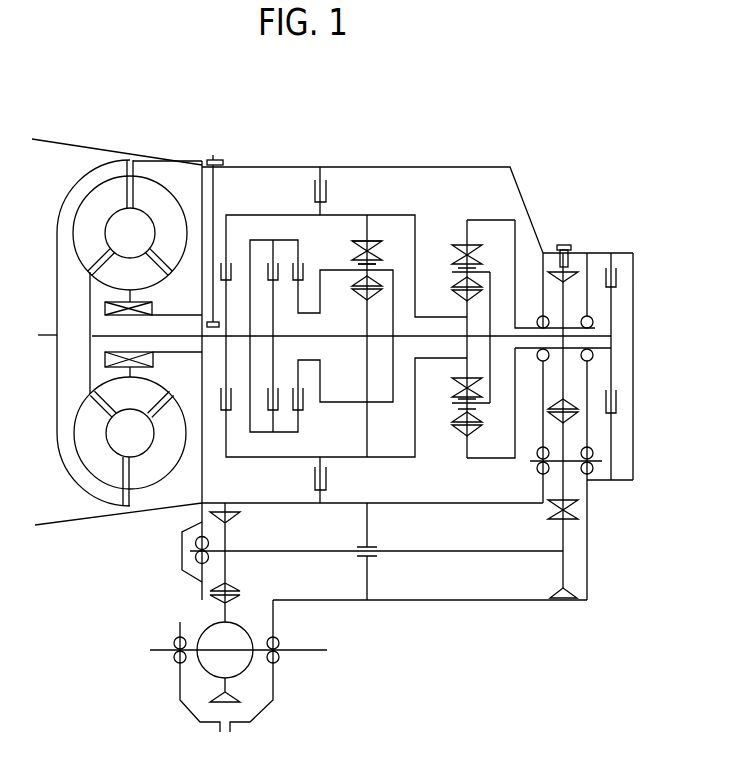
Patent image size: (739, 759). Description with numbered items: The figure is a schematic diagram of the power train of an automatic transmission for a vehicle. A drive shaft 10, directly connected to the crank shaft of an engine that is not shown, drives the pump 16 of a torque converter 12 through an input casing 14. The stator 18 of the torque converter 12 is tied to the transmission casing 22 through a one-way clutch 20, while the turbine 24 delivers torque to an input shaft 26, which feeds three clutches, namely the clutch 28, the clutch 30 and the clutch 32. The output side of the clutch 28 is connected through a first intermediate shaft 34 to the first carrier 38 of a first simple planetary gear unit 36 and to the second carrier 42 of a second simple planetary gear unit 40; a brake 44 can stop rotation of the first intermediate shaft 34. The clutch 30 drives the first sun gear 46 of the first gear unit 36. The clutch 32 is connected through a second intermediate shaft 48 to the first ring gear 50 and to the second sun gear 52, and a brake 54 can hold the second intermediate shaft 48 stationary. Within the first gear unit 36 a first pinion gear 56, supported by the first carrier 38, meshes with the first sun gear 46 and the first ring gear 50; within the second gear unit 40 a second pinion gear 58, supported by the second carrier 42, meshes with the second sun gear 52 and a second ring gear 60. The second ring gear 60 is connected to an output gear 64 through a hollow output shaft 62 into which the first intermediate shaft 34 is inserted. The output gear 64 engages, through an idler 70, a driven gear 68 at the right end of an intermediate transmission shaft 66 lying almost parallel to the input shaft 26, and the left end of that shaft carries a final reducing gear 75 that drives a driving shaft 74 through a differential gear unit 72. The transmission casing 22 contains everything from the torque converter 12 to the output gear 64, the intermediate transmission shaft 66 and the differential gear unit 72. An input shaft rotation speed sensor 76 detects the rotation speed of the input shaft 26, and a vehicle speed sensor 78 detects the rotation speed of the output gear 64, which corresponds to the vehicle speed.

The drive shaft 10 is at (47, 342).
The torque converter 12 is at (140, 166).
The input casing 14 is at (57, 268).
The pump 16 is at (162, 183).
The stator 18 is at (88, 267).
The one-way clutch 20 is at (102, 307).
The transmission casing 22 is at (397, 168).
The turbine 24 is at (78, 203).
The input shaft 26 is at (163, 333).
The clutch 28 is at (302, 262).
The clutch 30 is at (268, 258).
The clutch 32 is at (228, 232).
The first intermediate shaft 34 is at (448, 338).
The first simple planetary gear unit 36 is at (386, 239).
The first carrier 38 is at (325, 268).
The second simple planetary gear unit 40 is at (468, 237).
The second carrier 42 is at (490, 272).
The brake 44 is at (617, 268).
The first sun gear 46 is at (367, 303).
The second intermediate shaft 48 is at (343, 215).
The first ring gear 50 is at (362, 218).
The second sun gear 52 is at (462, 300).
The brake 54 is at (325, 176).
The first pinion gear 56 is at (374, 252).
The second pinion gear 58 is at (458, 256).
The second ring gear 60 is at (462, 241).
The hollow output shaft 62 is at (518, 317).
The output gear 64 is at (576, 272).
The intermediate transmission shaft 66 is at (470, 553).
The driven gear 68 is at (575, 513).
The idler 70 is at (577, 501).
The differential gear unit 72 is at (235, 627).
The driving shaft 74 is at (152, 652).
The final reducing gear 75 is at (203, 600).
The input shaft rotation speed sensor 76 is at (213, 155).
The vehicle speed sensor 78 is at (563, 245).